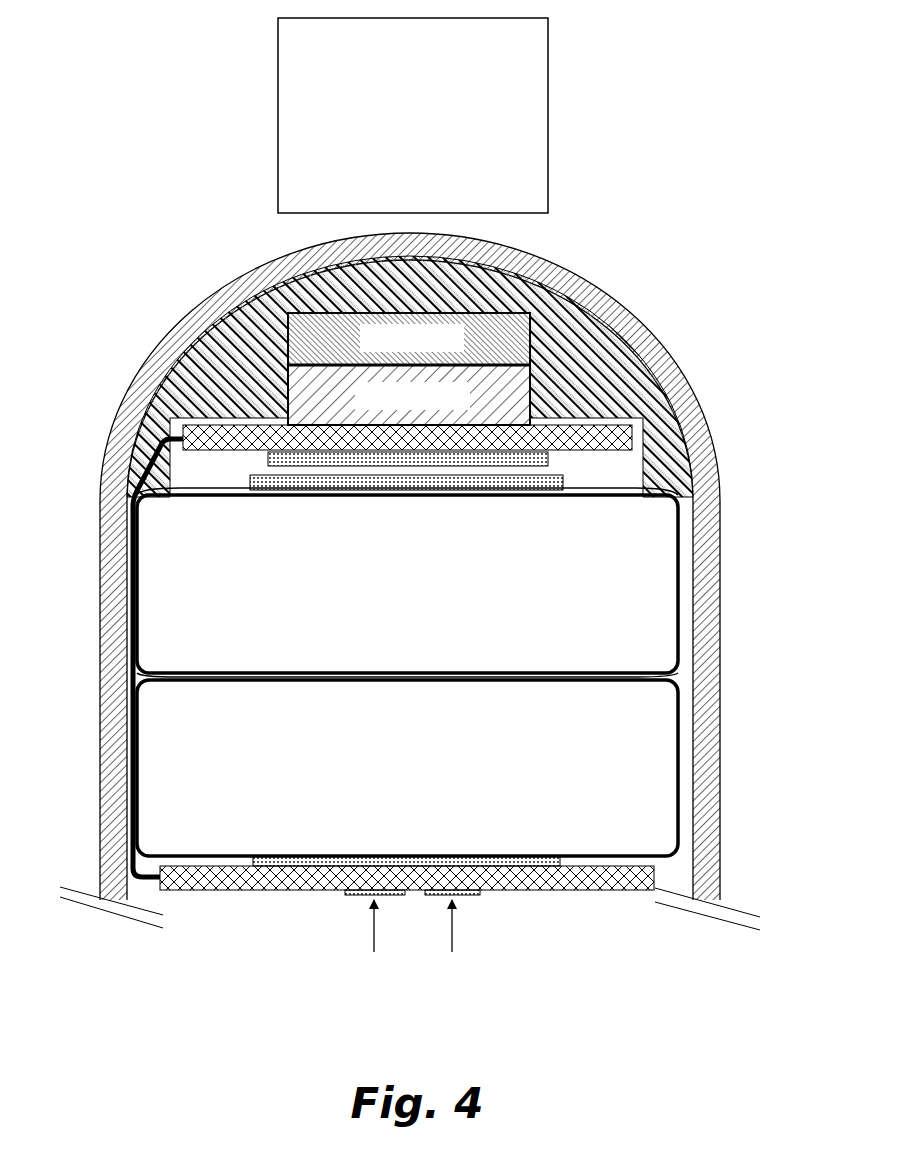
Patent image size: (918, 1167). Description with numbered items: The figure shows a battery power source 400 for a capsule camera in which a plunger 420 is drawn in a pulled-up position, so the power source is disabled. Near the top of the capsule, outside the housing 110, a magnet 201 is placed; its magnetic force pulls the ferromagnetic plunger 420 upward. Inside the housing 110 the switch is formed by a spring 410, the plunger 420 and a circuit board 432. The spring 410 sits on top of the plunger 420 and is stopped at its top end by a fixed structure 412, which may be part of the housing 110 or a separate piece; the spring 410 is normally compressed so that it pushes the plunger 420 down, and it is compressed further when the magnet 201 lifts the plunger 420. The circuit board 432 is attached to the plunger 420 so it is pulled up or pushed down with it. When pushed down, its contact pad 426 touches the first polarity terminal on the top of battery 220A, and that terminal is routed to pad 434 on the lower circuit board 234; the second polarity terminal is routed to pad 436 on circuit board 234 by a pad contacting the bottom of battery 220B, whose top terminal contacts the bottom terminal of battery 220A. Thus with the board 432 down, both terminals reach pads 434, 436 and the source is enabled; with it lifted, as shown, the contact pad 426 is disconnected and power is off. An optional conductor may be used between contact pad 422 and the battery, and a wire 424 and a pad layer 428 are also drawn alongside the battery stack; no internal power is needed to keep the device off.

The magnet 201 is at (548, 118).
The battery power source 400 is at (688, 202).
The housing 110 is at (566, 262).
The spring 410 is at (532, 338).
The fixed structure 412 is at (338, 326).
The plunger 420 is at (532, 396).
The circuit board 432 is at (633, 438).
The contact pad 426 is at (550, 458).
The contact pad 422 is at (563, 483).
The wire 424 is at (147, 467).
The battery 220A is at (678, 584).
The battery 220B is at (678, 774).
The contact layer 428 is at (562, 862).
The circuit board 234 is at (655, 878).
The pad 434 is at (348, 895).
The pad 436 is at (478, 895).